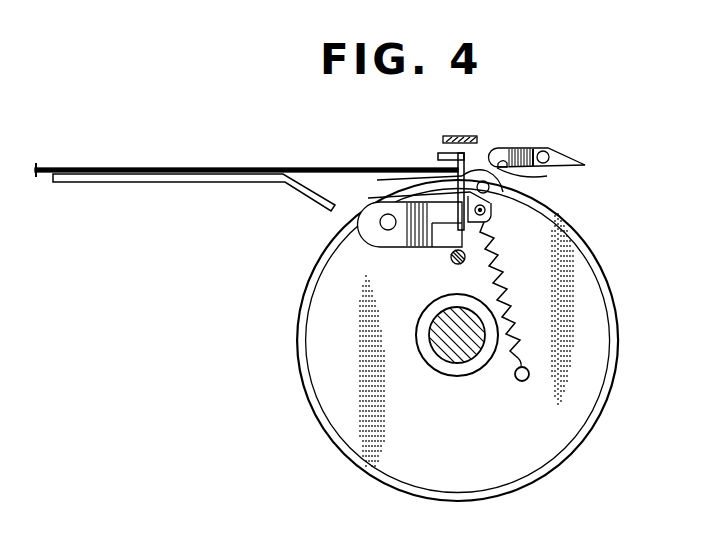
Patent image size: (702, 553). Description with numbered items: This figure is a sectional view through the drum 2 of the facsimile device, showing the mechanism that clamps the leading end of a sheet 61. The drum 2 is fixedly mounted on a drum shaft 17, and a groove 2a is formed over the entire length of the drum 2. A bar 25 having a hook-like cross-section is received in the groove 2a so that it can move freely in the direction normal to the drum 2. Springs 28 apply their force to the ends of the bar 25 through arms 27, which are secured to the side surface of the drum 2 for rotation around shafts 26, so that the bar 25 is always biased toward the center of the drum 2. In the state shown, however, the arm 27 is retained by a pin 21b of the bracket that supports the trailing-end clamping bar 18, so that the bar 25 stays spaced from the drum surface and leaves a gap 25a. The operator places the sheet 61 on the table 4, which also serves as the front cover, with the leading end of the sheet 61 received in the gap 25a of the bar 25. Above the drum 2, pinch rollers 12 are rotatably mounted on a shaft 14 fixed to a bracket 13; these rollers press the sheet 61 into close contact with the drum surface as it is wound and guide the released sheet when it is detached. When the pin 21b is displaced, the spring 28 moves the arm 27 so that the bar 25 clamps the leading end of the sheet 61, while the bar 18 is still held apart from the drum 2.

The drum 2 is at (617, 318).
The groove 2a is at (378, 180).
The table 4 is at (190, 182).
The pinch roller 12 is at (535, 178).
The bracket 13 is at (570, 162).
The shaft 14 is at (502, 160).
The drum shaft 17 is at (447, 355).
The bar 18 is at (465, 136).
The pin 21b is at (452, 262).
The bar 25 is at (452, 153).
The gap 25a is at (438, 157).
The shaft 26 is at (383, 230).
The arm 27 is at (411, 243).
The spring 28 is at (512, 333).
The sheet 61 is at (95, 167).